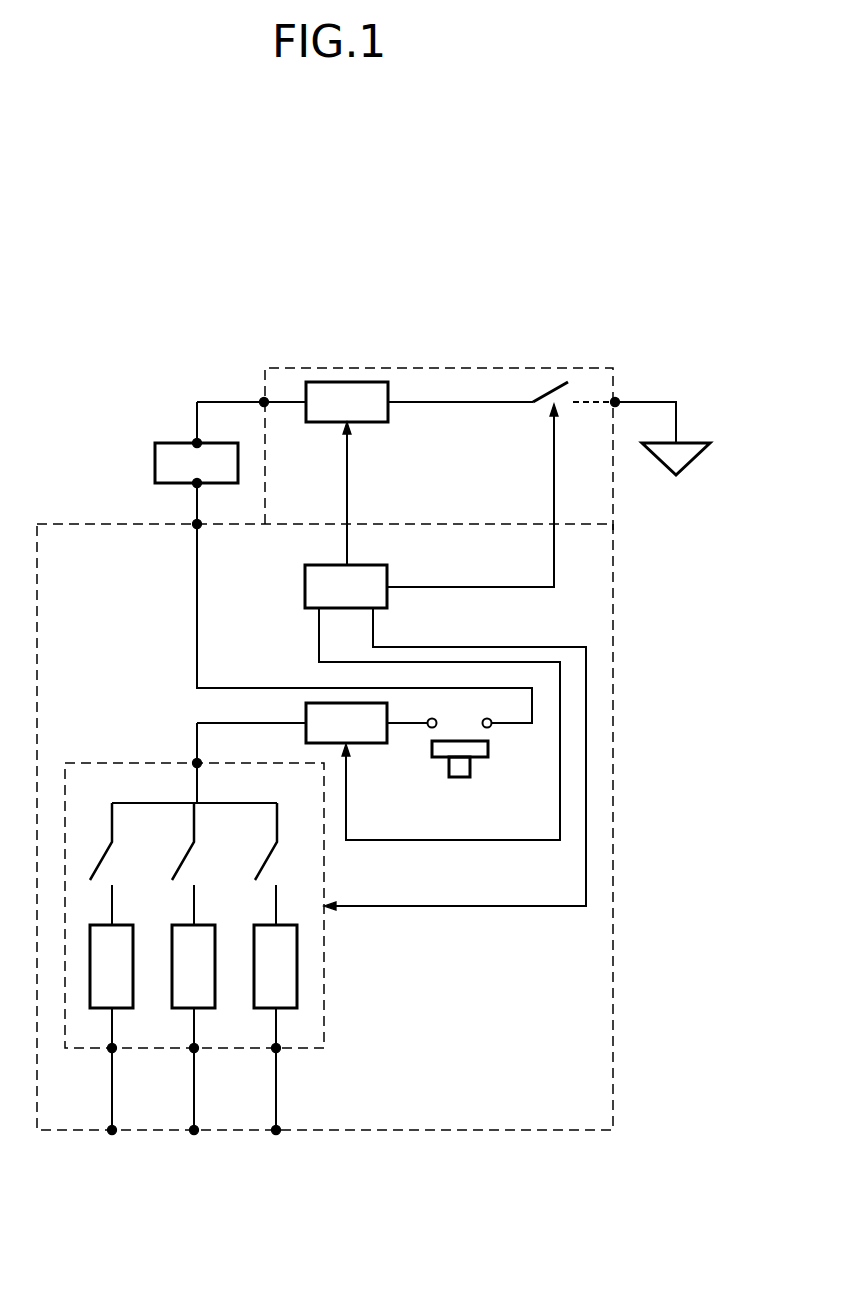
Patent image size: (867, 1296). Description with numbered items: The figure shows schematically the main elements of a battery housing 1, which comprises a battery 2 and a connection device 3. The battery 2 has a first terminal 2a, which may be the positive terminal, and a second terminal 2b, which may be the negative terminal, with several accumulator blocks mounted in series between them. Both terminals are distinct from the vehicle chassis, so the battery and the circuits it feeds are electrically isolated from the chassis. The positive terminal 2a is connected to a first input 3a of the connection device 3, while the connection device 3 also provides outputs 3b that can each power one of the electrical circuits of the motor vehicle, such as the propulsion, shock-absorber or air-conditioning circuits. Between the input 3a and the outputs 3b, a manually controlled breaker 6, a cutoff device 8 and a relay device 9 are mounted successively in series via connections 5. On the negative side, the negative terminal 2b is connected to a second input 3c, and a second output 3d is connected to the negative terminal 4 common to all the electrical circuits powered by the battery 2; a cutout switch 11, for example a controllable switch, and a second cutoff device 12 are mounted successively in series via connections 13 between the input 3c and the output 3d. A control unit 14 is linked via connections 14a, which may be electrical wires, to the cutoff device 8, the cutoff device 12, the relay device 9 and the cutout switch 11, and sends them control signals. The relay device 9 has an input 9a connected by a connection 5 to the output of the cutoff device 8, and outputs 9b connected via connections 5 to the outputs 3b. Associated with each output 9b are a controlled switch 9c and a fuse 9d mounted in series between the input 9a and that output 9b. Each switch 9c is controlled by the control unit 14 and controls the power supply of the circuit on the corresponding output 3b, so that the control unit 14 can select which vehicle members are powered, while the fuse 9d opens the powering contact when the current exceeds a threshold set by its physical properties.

The battery housing 1 is at (78, 376).
The battery 2 is at (196, 463).
The first terminal 2a is at (195, 485).
The second terminal 2b is at (195, 441).
The connection device 3 is at (440, 367).
The first input 3a is at (195, 528).
The outputs 3b is at (112, 1136).
The second input 3c is at (262, 400).
The second output 3d is at (619, 399).
The negative terminal 4 is at (708, 443).
The connections 5 is at (195, 603).
The manually controlled breaker 6 is at (458, 780).
The cutoff device 8 is at (366, 723).
The relay device 9 is at (325, 977).
The input 9a is at (200, 760).
The outputs 9b is at (115, 1051).
The controlled switches 9c is at (106, 858).
The fuse 9d is at (193, 946).
The cutout switch 11 is at (549, 392).
The second cutoff device 12 is at (347, 402).
The connections 13 is at (460, 403).
The control unit 14 is at (346, 586).
The connections 14a is at (348, 493).